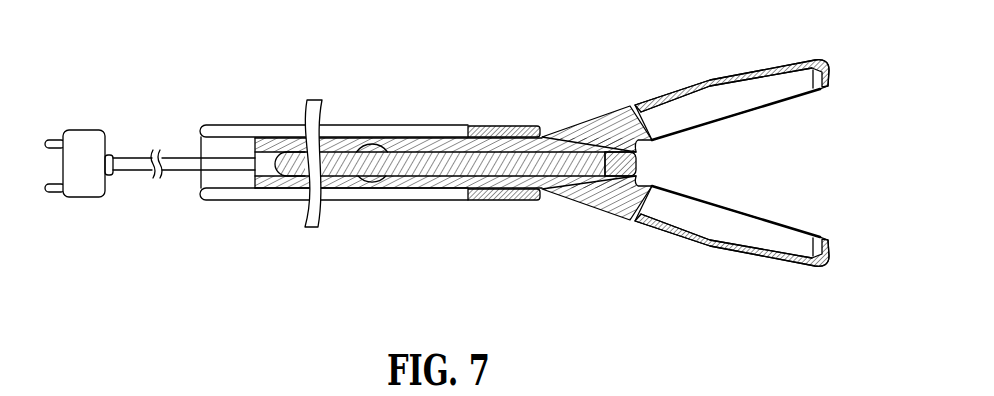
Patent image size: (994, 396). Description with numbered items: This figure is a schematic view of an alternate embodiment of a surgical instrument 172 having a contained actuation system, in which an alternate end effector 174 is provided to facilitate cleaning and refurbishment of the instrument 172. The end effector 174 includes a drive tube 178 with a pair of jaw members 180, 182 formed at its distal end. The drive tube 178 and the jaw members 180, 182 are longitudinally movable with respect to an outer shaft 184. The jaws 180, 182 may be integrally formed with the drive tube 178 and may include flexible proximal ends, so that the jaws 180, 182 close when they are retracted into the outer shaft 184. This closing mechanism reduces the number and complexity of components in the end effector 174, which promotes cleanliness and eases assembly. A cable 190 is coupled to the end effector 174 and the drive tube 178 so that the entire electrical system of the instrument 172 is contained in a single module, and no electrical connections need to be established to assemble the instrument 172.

The surgical instrument 172 is at (437, 153).
The end effector 174 is at (685, 166).
The drive tube 178 is at (520, 143).
The jaw member 180 is at (768, 67).
The jaw member 182 is at (768, 258).
The outer shaft 184 is at (410, 130).
The cable 190 is at (130, 167).